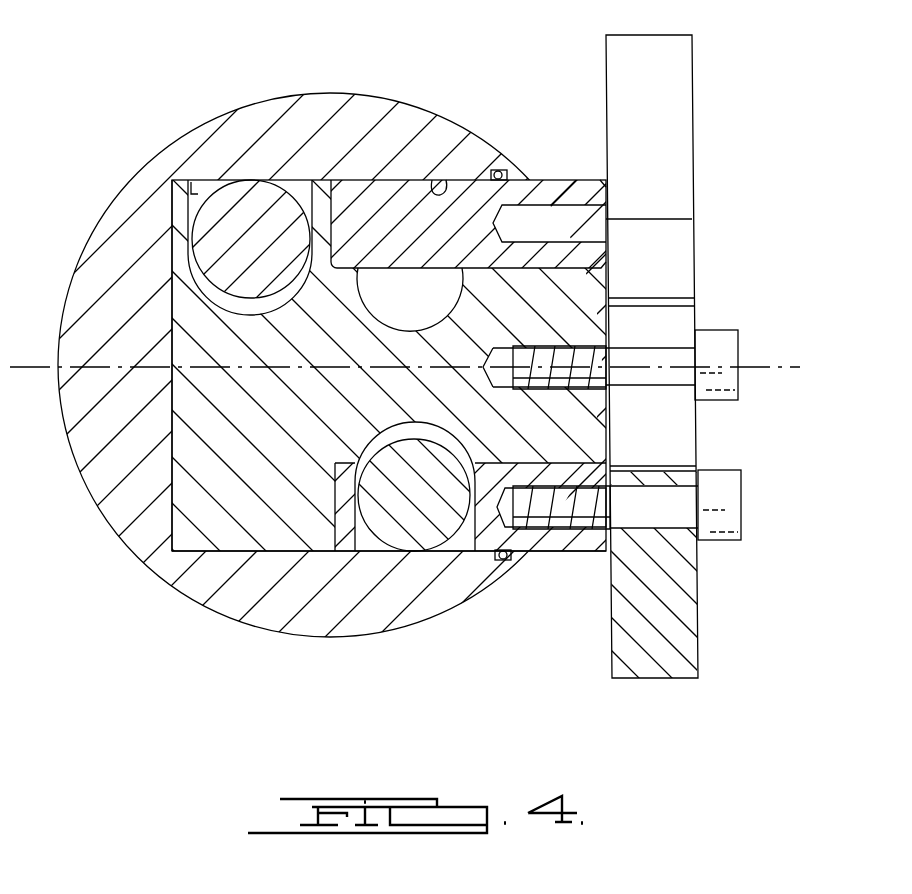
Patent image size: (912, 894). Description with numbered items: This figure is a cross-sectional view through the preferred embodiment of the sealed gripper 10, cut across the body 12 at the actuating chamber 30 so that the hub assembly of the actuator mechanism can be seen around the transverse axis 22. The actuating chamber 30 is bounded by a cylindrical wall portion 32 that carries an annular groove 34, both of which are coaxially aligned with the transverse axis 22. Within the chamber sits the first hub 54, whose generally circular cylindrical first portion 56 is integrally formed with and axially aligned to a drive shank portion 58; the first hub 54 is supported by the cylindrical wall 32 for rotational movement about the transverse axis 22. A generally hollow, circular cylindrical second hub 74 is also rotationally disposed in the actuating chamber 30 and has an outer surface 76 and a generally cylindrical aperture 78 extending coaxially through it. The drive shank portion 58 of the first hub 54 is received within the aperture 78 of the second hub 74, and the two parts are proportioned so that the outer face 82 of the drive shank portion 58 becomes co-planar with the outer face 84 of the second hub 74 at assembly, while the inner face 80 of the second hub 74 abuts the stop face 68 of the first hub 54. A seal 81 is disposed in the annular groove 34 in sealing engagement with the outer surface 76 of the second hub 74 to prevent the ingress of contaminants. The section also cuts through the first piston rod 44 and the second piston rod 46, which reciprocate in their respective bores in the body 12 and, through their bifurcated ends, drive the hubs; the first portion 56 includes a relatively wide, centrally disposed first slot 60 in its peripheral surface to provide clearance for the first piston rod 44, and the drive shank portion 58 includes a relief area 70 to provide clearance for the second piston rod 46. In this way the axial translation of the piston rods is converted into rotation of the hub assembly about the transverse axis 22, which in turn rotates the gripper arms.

The sealed gripper 10 is at (456, 447).
The body 12 is at (106, 256).
The transverse axis 22 is at (790, 353).
The actuating chamber 30 is at (390, 290).
The cylindrical wall portion 32 is at (433, 185).
The annular groove 34 is at (501, 172).
The first piston rod 44 is at (249, 209).
The second piston rod 46 is at (404, 542).
The first hub 54 is at (173, 481).
The first portion 56 is at (184, 548).
The drive shank portion 58 is at (576, 326).
The first slot 60 is at (197, 191).
The stop face 68 is at (341, 469).
The relief area 70 is at (452, 444).
The second hub 74 is at (373, 197).
The outer surface 76 is at (572, 180).
The cylindrical aperture 78 is at (433, 272).
The inner face 80 is at (324, 548).
The seal 81 is at (505, 561).
The outer face of drive shank portion 82 is at (608, 417).
The outer face of second hub 84 is at (608, 253).